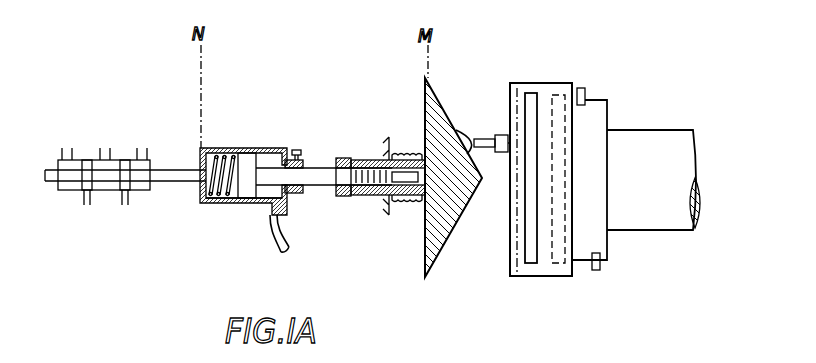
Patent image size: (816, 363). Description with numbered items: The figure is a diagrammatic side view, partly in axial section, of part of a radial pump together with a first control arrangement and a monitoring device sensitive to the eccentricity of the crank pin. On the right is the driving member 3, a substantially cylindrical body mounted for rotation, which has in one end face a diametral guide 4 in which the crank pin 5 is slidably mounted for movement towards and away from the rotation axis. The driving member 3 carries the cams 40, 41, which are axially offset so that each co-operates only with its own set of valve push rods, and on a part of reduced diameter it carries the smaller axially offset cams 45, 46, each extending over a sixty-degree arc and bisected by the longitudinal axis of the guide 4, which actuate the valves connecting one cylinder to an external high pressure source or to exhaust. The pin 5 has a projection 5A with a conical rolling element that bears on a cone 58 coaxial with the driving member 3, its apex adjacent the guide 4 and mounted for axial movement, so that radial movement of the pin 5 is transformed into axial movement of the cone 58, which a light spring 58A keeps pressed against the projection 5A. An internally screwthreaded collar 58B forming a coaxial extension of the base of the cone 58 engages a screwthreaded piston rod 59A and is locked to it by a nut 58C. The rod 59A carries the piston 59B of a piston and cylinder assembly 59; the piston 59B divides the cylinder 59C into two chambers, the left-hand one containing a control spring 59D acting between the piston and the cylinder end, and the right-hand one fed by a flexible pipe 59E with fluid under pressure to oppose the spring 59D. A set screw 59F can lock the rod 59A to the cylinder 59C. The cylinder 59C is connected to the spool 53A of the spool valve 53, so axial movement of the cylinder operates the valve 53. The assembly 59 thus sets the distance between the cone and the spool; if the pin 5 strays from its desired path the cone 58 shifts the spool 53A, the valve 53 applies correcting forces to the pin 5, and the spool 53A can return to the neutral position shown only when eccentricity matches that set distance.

The driving member 3 is at (545, 277).
The diametral guide 4 is at (509, 245).
The crank pin 5 is at (503, 133).
The projection 5A is at (471, 131).
The cam 40 is at (560, 95).
The cam 41 is at (531, 93).
The cam 45 is at (586, 90).
The cam 46 is at (597, 271).
The spool valve 53 is at (78, 195).
The spool 53A is at (140, 192).
The cone 58 is at (438, 95).
The light spring 58A is at (410, 203).
The internally screwthreaded collar 58B is at (395, 160).
The nut 58C is at (344, 157).
The piston and cylinder assembly 59 is at (200, 205).
The piston rod 59A is at (313, 196).
The piston 59B is at (247, 150).
The cylinder 59C is at (220, 204).
The control spring 59D is at (221, 150).
The flexible pipe 59E is at (277, 250).
The set screw 59F is at (303, 148).